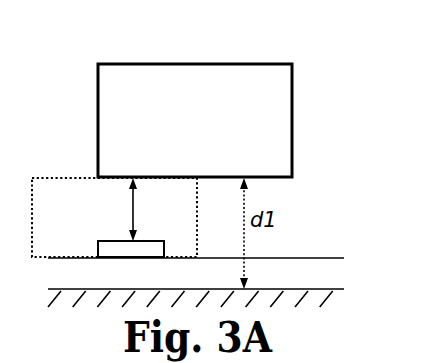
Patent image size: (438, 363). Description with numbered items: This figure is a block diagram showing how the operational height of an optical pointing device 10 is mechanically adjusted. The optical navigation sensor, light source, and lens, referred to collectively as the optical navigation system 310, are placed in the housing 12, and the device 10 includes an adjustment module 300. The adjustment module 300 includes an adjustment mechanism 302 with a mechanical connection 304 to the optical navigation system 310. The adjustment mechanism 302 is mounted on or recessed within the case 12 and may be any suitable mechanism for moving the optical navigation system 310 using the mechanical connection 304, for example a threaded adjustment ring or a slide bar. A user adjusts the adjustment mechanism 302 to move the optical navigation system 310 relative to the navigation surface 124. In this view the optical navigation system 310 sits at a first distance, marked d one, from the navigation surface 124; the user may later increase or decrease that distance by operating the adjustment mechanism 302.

The optical pointing device 10 is at (240, 100).
The optical navigation system 310 is at (293, 120).
The adjustment module 300 is at (66, 178).
The adjustment mechanism 302 is at (100, 241).
The mechanical connection 304 is at (135, 210).
The housing 12 is at (316, 258).
The navigation surface 124 is at (322, 289).